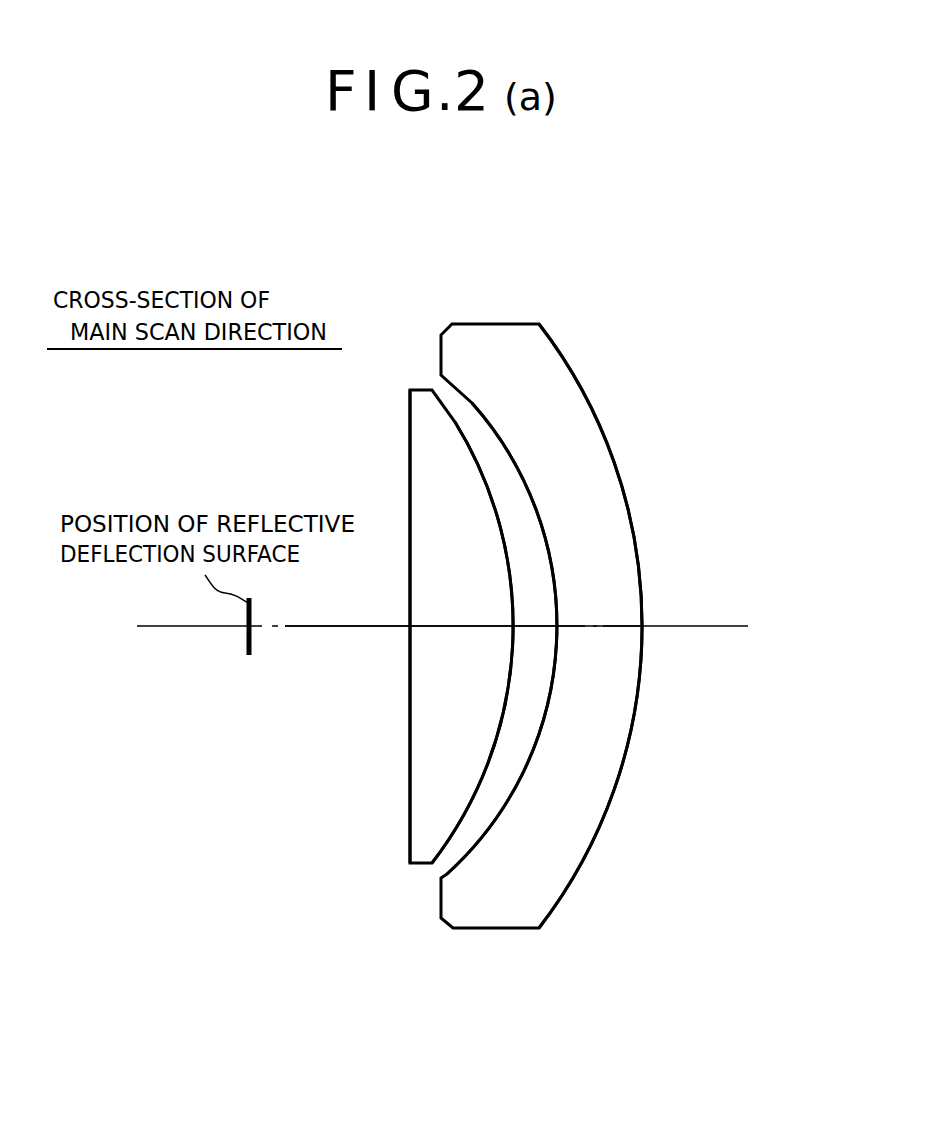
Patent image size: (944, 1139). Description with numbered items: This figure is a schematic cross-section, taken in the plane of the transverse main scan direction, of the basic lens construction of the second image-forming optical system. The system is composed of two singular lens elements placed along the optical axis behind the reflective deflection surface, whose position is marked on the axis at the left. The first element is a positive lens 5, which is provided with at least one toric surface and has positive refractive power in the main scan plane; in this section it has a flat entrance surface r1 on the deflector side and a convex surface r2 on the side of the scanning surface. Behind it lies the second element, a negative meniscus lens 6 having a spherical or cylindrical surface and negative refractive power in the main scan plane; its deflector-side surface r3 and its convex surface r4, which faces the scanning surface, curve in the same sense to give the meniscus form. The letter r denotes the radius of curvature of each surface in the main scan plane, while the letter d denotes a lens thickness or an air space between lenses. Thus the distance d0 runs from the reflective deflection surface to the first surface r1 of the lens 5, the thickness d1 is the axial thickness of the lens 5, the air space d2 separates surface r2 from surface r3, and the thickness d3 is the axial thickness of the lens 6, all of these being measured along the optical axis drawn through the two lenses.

The first singular lens element 5 is at (417, 797).
The second singular lens element 6 is at (587, 833).
The surface of lens 5 r1 is at (410, 462).
The convex surface of lens 5 r2 is at (448, 419).
The surface of lens 6 r3 is at (472, 403).
The convex surface of lens 6 r4 is at (586, 395).
The distance from the reflective deflection surface to the first surface of lens 5 d0 is at (303, 627).
The thickness of lens 5 d1 is at (435, 627).
The air space between lenses 5 and 6 d2 is at (538, 627).
The thickness of lens 6 d3 is at (608, 626).